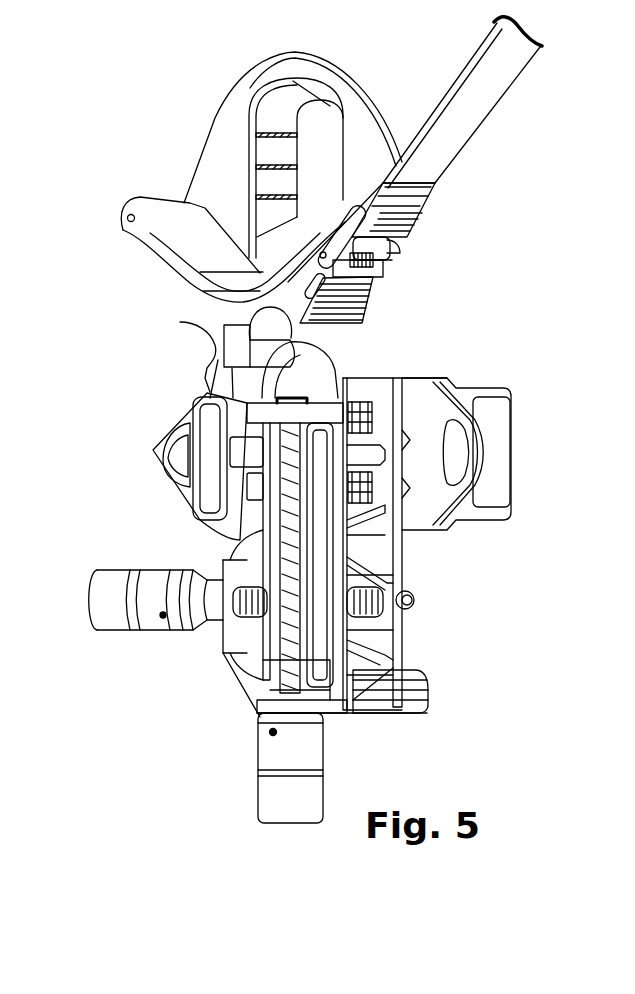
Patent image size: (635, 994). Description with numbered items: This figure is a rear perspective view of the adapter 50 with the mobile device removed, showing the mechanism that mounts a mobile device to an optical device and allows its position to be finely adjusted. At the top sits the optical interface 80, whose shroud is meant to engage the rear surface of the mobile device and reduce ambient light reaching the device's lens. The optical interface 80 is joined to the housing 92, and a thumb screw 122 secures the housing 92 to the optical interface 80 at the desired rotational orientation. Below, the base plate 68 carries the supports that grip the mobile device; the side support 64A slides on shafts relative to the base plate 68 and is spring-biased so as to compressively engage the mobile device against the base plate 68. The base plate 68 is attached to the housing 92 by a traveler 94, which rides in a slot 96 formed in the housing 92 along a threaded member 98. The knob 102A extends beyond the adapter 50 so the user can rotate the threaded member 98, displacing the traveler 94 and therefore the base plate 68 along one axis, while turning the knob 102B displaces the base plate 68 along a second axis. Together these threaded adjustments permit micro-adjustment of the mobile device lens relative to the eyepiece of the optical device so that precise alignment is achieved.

The adapter 50 is at (156, 148).
The optical interface 80 is at (242, 103).
The thumb screw 122 is at (228, 352).
The housing 92 is at (275, 418).
The slot 96 is at (277, 530).
The traveler 94 is at (290, 603).
The threaded member 98 is at (278, 662).
The base plate 68 is at (380, 387).
The side support 64A is at (502, 418).
The knob 102B is at (127, 620).
The knob 102A is at (312, 745).